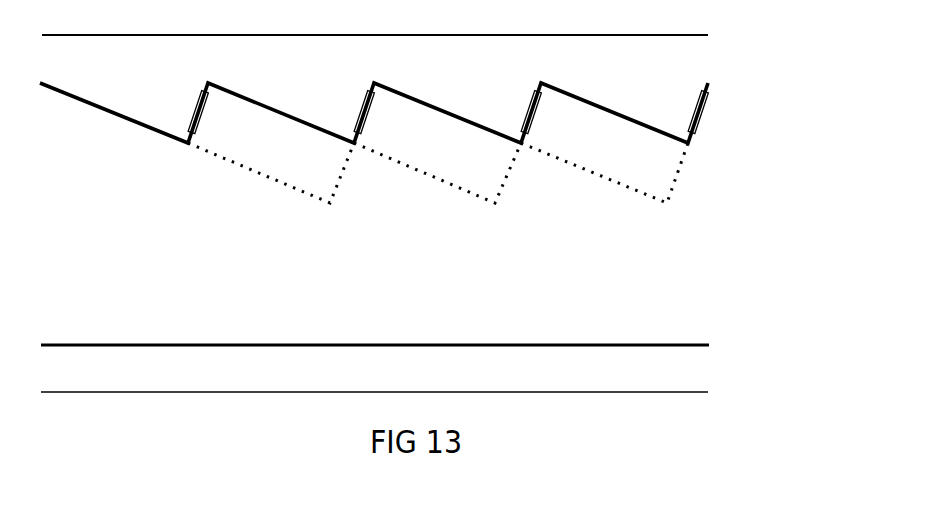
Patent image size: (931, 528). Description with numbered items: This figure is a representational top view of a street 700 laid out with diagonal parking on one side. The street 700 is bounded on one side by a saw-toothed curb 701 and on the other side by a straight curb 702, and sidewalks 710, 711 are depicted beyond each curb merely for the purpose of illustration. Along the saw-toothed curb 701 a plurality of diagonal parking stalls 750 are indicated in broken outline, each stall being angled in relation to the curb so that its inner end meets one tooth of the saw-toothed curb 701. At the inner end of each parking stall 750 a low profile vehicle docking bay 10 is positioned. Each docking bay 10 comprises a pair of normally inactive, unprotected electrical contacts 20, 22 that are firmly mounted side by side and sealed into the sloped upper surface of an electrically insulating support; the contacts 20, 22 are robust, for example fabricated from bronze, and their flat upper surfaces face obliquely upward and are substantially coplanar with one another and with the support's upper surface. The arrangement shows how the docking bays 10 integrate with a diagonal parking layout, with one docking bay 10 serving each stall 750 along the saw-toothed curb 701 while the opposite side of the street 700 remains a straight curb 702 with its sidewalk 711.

The vehicle docking bay 10 is at (192, 115).
The electrical contact 20 is at (198, 125).
The electrical contact 22 is at (208, 87).
The street 700 is at (685, 255).
The saw-toothed curb 701 is at (133, 119).
The straight curb 702 is at (172, 342).
The sidewalk 710 is at (685, 53).
The sidewalk 711 is at (685, 367).
The diagonal parking stall 750 is at (438, 169).